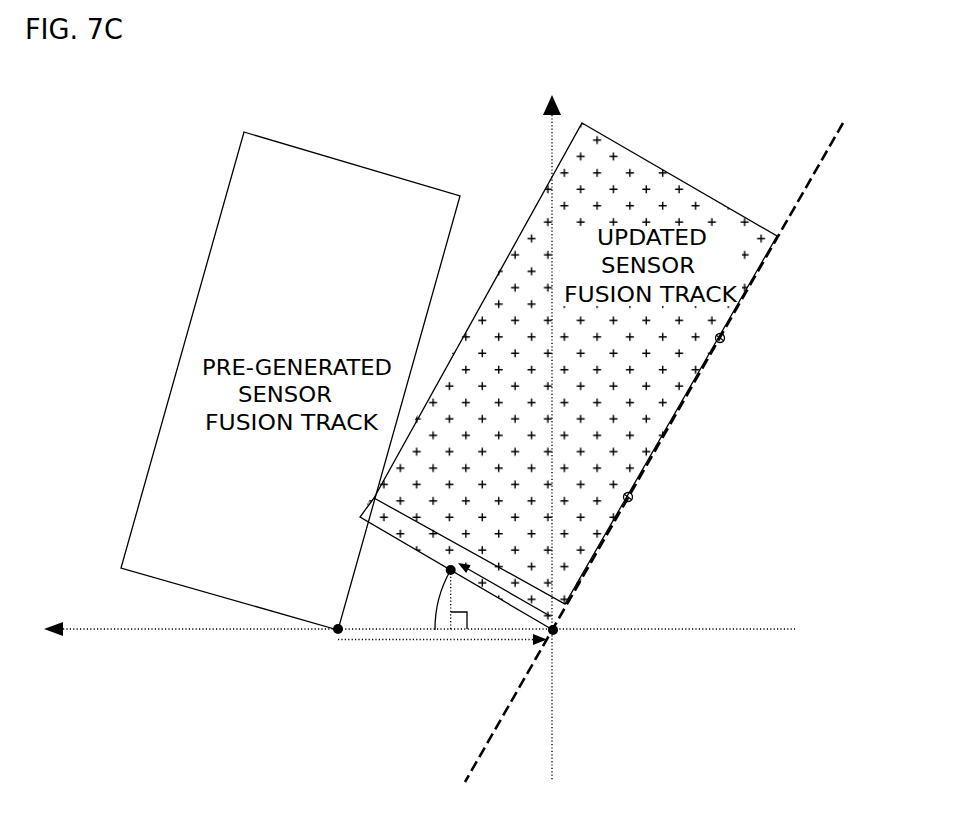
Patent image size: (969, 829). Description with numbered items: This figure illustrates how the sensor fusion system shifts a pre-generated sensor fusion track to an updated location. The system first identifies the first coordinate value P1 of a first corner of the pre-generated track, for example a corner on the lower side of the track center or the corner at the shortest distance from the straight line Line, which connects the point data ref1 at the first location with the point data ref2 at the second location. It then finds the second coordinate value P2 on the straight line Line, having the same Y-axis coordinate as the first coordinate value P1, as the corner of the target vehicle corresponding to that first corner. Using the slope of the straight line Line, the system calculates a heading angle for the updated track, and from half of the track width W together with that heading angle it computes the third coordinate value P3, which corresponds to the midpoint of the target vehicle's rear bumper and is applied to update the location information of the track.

The first coordinate value P1 is at (325, 641).
The second coordinate value P2 is at (568, 643).
The third coordinate value P3 is at (433, 577).
The point data at the first location ref1 is at (745, 342).
The point data at the second location ref2 is at (655, 502).
The width of the track W is at (470, 552).
The straight line Line is at (668, 439).